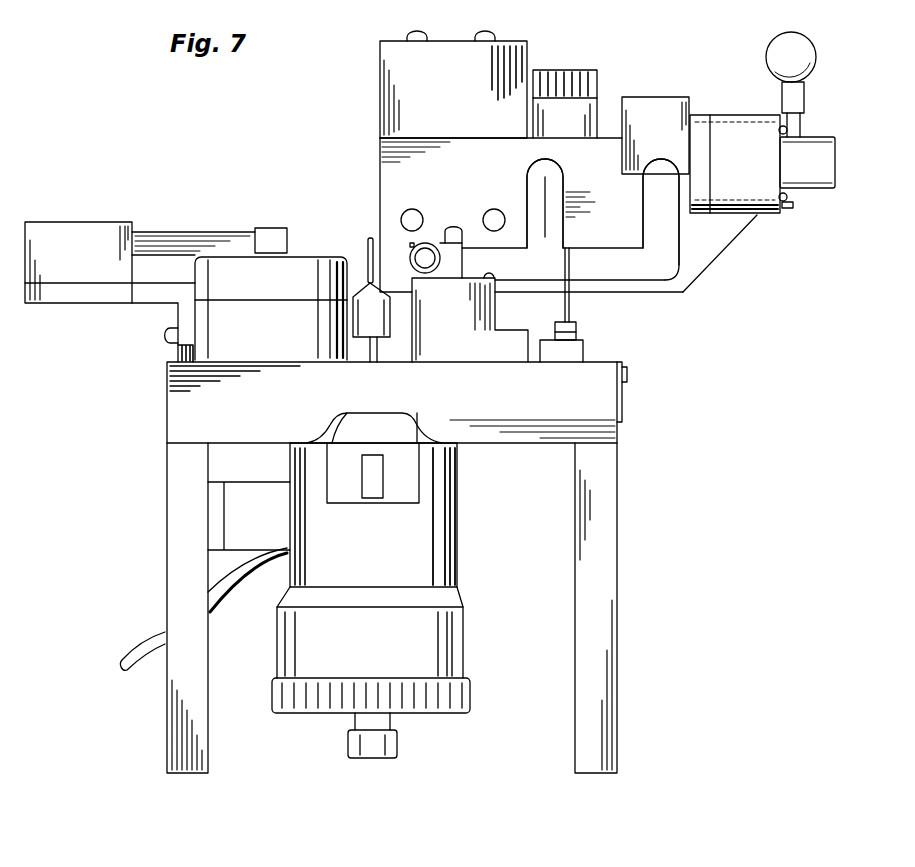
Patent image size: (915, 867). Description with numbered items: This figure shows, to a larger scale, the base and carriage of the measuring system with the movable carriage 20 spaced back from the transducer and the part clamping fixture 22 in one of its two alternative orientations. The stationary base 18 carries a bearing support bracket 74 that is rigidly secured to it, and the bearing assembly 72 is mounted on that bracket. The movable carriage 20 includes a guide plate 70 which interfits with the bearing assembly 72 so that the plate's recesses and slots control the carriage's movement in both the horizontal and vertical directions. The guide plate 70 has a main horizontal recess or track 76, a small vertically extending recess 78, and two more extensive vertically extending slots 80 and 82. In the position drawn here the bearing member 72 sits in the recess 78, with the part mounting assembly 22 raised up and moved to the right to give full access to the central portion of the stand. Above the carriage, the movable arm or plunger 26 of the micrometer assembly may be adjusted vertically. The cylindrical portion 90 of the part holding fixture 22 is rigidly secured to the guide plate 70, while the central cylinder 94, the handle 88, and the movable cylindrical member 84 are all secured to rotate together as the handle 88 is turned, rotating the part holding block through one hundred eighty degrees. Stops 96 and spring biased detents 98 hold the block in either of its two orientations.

The base 18 is at (595, 388).
The movable carriage 20 is at (365, 147).
The part clamping fixture 22 is at (655, 107).
The movable arm or plunger 26 is at (368, 245).
The guide plate 70 is at (477, 199).
The bearing assembly 72 is at (432, 262).
The bearing support bracket 74 is at (478, 351).
The main horizontal recess or track 76 is at (603, 270).
The small vertically extending recess 78 is at (412, 253).
The vertically extending slot 80 is at (553, 192).
The vertically extending slot 82 is at (663, 195).
The movable portion (cylindrical member) 84 is at (700, 197).
The handle 88 is at (805, 52).
The cylindrical portion 90 is at (733, 122).
The central cylinder 94 is at (823, 160).
The stops 96 is at (792, 210).
The spring biased detents 98 is at (785, 130).